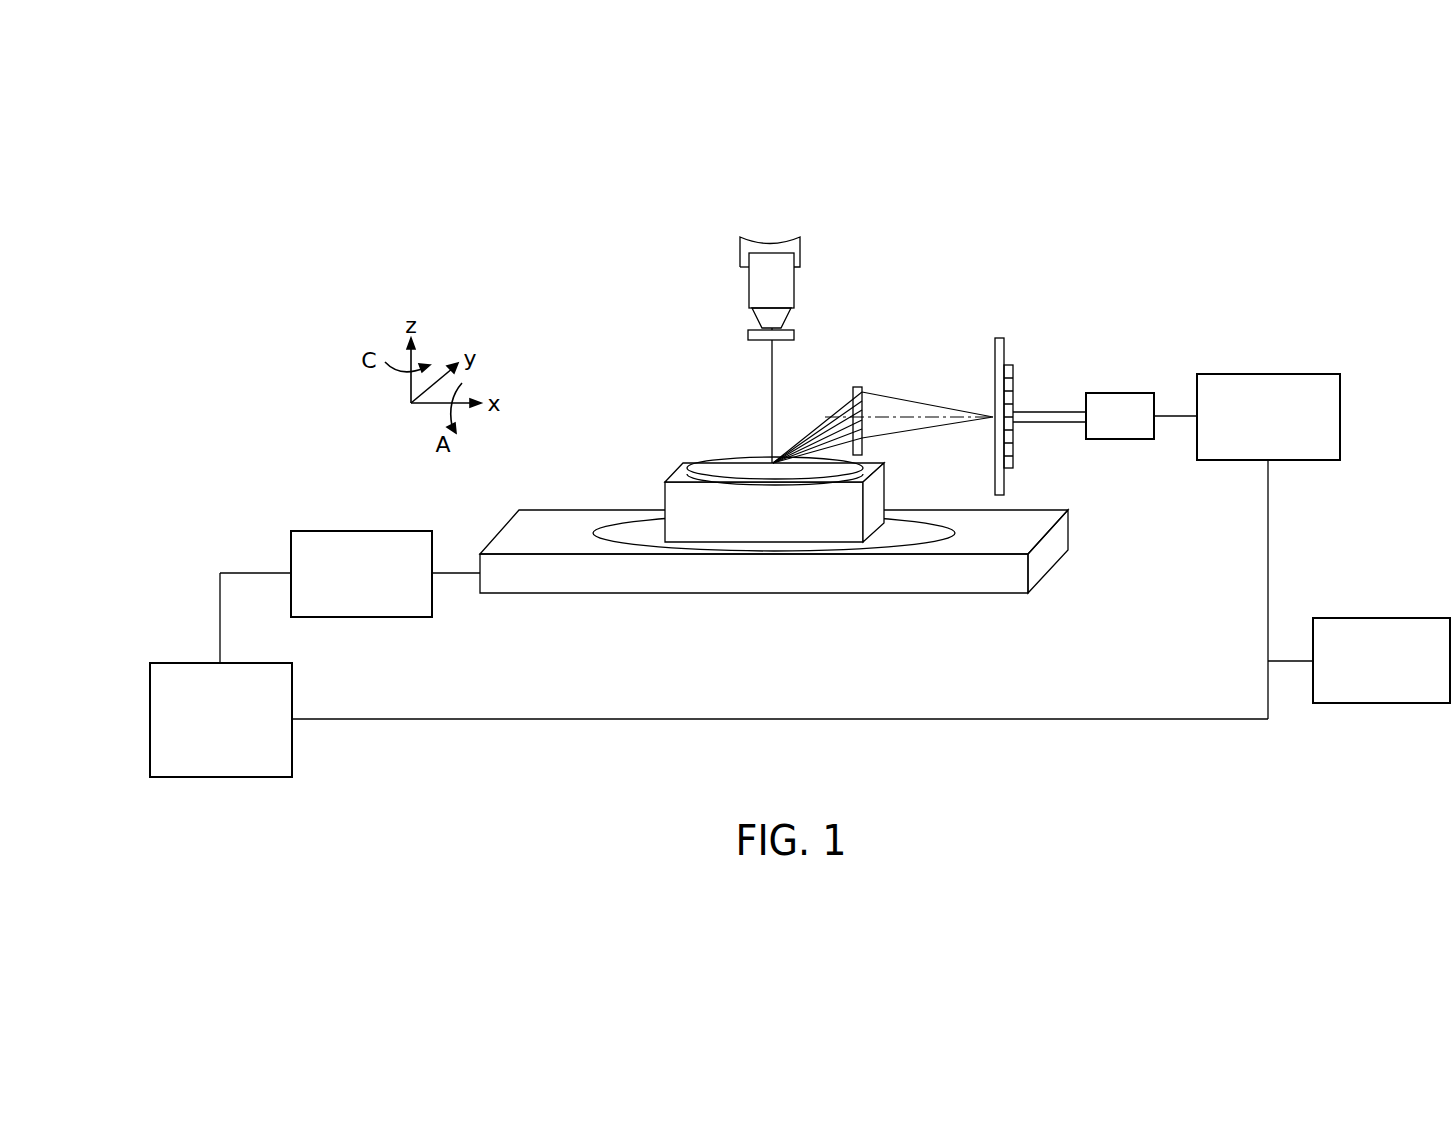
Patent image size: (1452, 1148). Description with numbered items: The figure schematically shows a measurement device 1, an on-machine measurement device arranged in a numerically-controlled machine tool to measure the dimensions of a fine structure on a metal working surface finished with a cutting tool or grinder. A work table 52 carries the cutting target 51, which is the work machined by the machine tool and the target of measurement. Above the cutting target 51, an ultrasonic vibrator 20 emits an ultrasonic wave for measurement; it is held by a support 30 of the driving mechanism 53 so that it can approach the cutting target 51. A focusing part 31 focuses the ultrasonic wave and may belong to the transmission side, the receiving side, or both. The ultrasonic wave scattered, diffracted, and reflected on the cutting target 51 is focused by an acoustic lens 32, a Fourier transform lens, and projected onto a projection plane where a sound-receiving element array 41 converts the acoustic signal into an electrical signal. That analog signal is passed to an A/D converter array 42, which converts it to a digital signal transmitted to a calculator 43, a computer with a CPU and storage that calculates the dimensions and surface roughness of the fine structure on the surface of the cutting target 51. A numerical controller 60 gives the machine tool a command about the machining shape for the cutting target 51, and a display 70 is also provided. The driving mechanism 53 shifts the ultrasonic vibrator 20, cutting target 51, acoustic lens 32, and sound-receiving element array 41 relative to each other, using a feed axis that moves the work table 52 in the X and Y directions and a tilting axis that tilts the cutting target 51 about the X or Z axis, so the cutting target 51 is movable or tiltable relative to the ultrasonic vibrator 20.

The measurement device 1 is at (1283, 222).
The ultrasonic vibrator 20 is at (793, 277).
The support 30 is at (747, 256).
The focusing part 31 is at (795, 335).
The acoustic lens 32 is at (862, 392).
The sound-receiving element array 41 is at (1013, 378).
The A/D converter array 42 is at (1138, 393).
The calculator 43 is at (1315, 374).
The cutting target 51 is at (663, 498).
The work table 52 is at (907, 577).
The driving mechanism 53 is at (343, 531).
The numerical controller 60 is at (178, 663).
The display 70 is at (1400, 618).